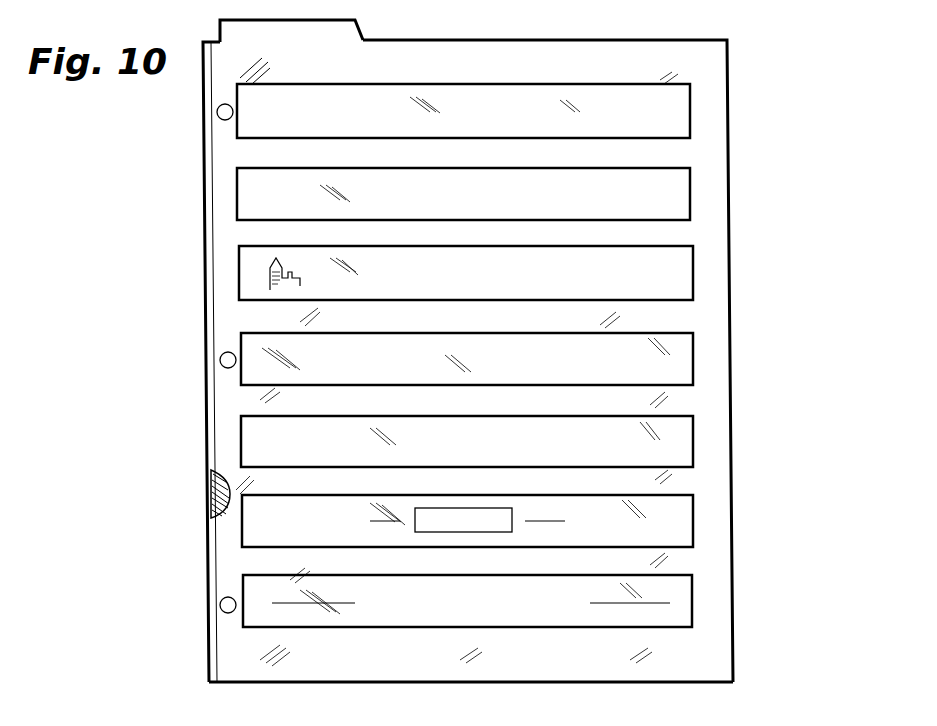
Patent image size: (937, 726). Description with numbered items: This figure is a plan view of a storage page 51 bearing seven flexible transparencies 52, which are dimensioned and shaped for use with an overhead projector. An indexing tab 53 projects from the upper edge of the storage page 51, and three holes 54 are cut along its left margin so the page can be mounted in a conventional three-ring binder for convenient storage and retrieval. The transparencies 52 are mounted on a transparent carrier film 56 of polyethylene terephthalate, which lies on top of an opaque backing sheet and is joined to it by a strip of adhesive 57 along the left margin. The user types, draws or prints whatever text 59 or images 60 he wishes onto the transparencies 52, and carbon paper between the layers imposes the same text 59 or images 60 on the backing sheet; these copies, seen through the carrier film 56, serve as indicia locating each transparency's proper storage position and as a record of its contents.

The storage page 51 is at (735, 97).
The flexible transparencies 52 is at (688, 120).
The indexing tab 53 is at (240, 30).
The holes 54 is at (218, 112).
The carrier film 56 is at (718, 650).
The strip of adhesive 57 is at (212, 502).
The text 59 is at (322, 92).
The images 60 is at (270, 276).